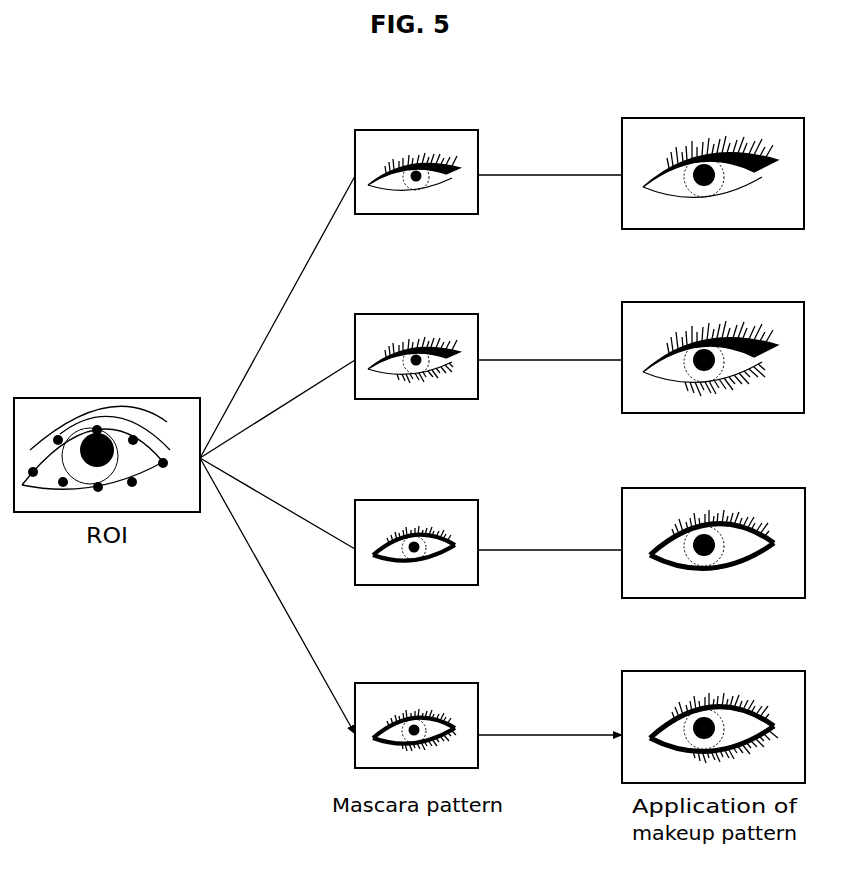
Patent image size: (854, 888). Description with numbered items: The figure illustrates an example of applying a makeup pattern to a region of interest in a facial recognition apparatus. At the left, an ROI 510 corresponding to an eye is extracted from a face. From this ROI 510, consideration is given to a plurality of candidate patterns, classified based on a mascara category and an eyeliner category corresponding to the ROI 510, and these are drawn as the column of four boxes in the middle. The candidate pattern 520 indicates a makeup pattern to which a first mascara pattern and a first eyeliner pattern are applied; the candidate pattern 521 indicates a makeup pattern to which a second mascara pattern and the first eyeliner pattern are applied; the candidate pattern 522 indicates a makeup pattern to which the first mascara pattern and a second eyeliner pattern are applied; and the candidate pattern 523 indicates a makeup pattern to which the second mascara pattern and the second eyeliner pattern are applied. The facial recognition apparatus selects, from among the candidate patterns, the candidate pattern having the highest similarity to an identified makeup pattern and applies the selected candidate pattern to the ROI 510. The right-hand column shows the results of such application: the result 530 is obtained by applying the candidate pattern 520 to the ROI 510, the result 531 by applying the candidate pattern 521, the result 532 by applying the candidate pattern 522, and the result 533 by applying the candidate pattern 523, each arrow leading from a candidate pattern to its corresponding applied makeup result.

The region of interest (ROI) 510 is at (118, 398).
The candidate pattern 520 is at (418, 130).
The candidate pattern 521 is at (418, 314).
The candidate pattern 522 is at (418, 500).
The candidate pattern 523 is at (418, 683).
The result 530 is at (714, 118).
The result 531 is at (714, 302).
The result 532 is at (714, 488).
The result 533 is at (714, 671).